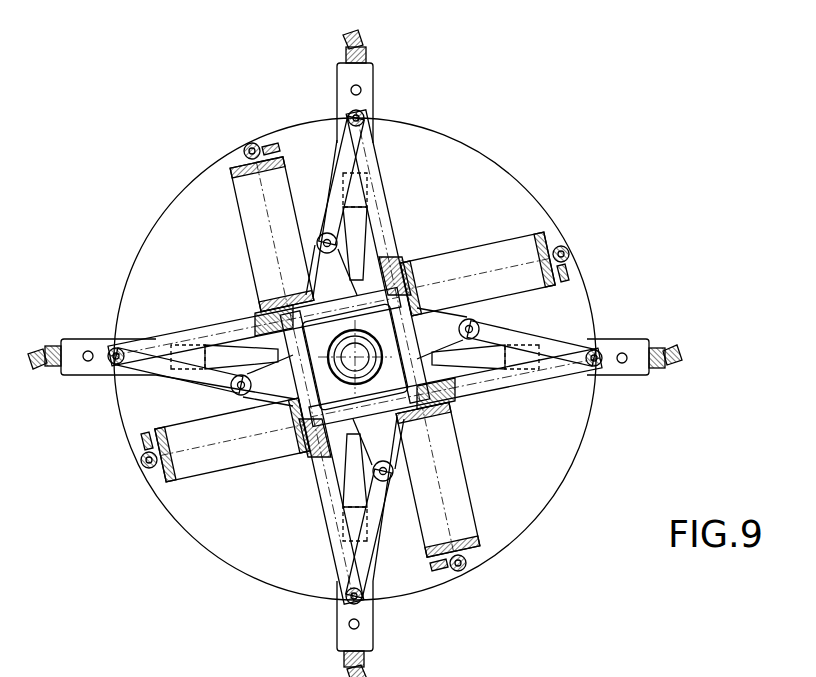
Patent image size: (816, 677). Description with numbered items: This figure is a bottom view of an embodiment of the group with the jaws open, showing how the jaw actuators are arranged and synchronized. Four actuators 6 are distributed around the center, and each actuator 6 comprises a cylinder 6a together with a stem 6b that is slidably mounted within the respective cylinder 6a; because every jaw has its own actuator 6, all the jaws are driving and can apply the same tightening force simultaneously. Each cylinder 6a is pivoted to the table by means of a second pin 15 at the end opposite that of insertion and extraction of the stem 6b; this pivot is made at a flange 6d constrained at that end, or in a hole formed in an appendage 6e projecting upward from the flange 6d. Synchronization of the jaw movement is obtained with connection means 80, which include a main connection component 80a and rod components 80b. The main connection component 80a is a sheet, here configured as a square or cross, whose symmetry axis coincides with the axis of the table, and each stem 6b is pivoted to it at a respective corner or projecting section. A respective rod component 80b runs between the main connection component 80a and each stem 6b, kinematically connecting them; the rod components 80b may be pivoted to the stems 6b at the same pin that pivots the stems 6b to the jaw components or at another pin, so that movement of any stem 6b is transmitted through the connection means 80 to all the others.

The actuator 6 is at (515, 240).
The cylinder 6a is at (242, 245).
The stem 6b is at (173, 338).
The flange 6d is at (245, 152).
The appendage 6e is at (142, 448).
The second pin 15 is at (140, 465).
The connection means 80 is at (324, 398).
The main connection component 80a is at (316, 232).
The rod component 80b is at (165, 378).